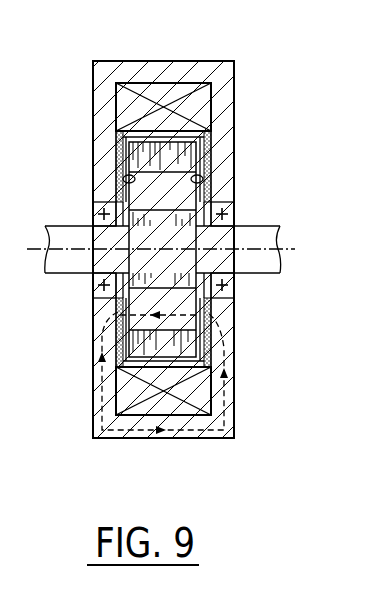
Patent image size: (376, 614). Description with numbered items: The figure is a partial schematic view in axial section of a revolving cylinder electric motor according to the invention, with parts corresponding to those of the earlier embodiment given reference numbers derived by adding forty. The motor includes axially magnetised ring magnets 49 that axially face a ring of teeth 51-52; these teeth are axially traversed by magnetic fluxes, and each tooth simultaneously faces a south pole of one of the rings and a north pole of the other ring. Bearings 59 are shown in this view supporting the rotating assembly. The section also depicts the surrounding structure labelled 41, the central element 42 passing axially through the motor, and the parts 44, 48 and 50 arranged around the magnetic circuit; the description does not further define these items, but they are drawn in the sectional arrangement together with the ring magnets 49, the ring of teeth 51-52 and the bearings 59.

The housing 41 is at (188, 225).
The shaft 42 is at (185, 228).
The coil 44 is at (164, 299).
The magnetic flux path 48 is at (163, 413).
The ring magnets 49 is at (82, 172).
The seal 50 is at (248, 173).
The ring of teeth 51-52 is at (234, 249).
The bearings 59 is at (210, 251).